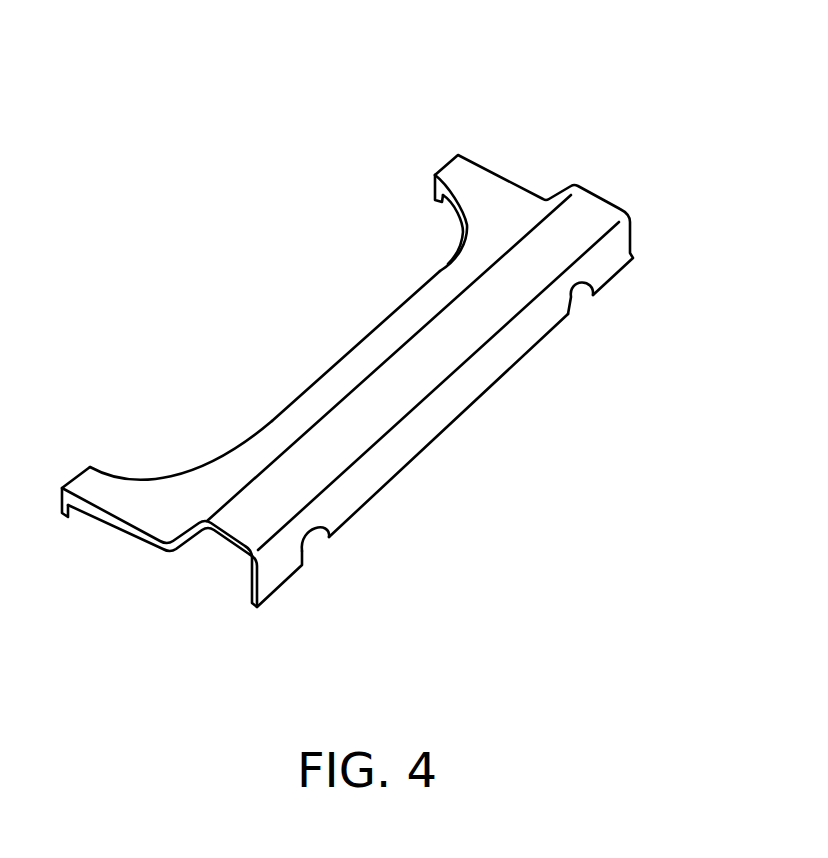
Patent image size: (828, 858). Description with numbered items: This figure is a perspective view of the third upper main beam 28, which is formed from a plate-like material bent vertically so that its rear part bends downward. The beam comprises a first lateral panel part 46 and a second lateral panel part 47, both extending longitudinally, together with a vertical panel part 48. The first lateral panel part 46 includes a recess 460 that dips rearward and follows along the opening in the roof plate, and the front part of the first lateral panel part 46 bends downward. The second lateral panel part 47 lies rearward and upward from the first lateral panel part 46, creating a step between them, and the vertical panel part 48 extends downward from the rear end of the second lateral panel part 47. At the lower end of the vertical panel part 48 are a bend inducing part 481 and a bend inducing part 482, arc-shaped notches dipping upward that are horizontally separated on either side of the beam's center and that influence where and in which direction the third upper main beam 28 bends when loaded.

The third upper main beam 28 is at (467, 510).
The first lateral panel part 46 is at (495, 198).
The second lateral panel part 47 is at (602, 202).
The vertical panel part 48 is at (503, 373).
The recess 460 is at (345, 355).
The bend inducing part 481 is at (302, 552).
The bend inducing part 482 is at (573, 309).